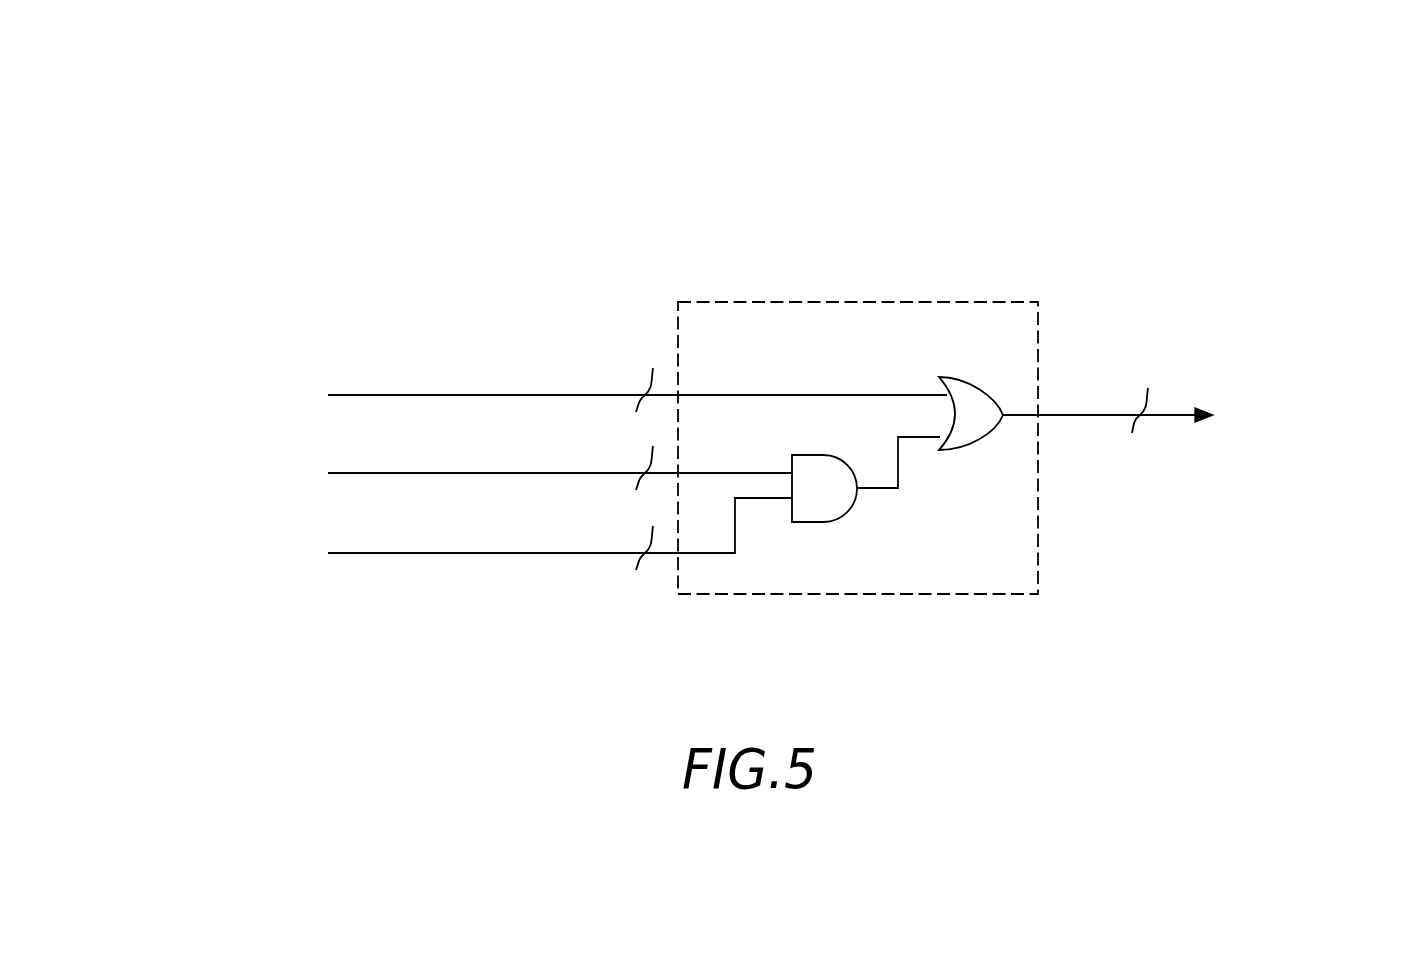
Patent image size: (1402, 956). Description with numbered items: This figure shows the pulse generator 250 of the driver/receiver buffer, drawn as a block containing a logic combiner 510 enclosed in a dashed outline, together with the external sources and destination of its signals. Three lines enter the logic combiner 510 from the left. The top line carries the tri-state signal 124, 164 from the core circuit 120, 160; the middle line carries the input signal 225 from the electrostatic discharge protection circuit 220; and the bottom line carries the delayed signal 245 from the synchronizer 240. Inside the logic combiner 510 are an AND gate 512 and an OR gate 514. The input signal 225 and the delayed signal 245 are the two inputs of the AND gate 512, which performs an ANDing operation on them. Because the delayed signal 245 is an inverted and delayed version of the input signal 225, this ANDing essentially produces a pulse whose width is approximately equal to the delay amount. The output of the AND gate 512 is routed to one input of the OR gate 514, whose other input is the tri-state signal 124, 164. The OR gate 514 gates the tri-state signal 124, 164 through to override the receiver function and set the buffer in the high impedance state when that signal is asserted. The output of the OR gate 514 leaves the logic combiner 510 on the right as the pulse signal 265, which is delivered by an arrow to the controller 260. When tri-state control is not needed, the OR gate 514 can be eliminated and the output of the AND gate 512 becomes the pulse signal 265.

The pulse generator 250 is at (1318, 150).
The core circuit 120 is at (229, 359).
The core circuit 160 is at (229, 359).
The electrostatic discharge (ESD) protection circuit 220 is at (218, 451).
The synchronizer 240 is at (237, 543).
The tri-state signal 124 is at (637, 383).
The tri-state signal 164 is at (637, 383).
The input signal 225 is at (560, 460).
The delayed signal 245 is at (560, 534).
The logic combiner 510 is at (927, 320).
The AND gate 512 is at (828, 472).
The OR gate 514 is at (975, 398).
The pulse signal 265 is at (1109, 381).
The controller 260 is at (1317, 412).